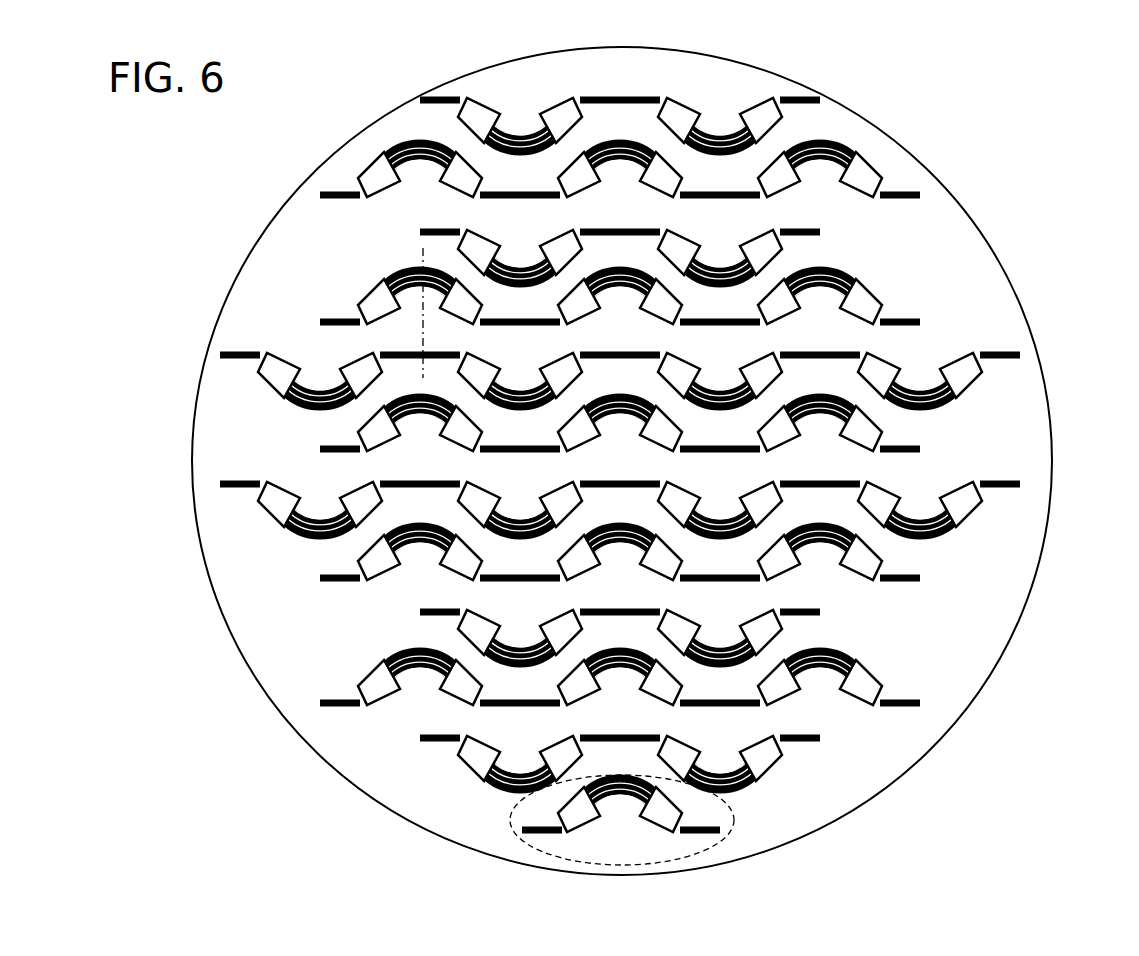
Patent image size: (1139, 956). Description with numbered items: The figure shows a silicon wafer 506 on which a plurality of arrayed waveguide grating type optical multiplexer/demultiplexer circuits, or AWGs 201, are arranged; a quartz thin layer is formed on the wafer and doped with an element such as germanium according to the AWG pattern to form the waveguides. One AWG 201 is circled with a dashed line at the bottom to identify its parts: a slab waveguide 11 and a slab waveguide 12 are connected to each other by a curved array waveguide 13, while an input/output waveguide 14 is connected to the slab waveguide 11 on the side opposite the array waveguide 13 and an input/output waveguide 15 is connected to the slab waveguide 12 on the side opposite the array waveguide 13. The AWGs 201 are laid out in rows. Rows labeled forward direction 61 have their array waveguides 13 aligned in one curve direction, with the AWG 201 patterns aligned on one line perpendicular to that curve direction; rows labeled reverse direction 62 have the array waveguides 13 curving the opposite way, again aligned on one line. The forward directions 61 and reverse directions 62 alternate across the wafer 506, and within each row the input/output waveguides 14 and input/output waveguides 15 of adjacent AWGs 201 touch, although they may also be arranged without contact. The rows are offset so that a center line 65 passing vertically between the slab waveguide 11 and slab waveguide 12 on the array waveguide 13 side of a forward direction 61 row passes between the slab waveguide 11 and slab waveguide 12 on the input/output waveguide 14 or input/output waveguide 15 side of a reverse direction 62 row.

The silicon wafer 506 is at (256, 234).
The center line 65 is at (420, 260).
The reverse direction 62 is at (848, 110).
The forward direction 61 is at (945, 206).
The arrayed waveguide grating type optical multiplexer/demultiplexer circuit 201 is at (510, 822).
The input/output waveguide 14 is at (533, 836).
The slab waveguide 11 is at (590, 832).
The array waveguide 13 is at (619, 802).
The slab waveguide 12 is at (655, 832).
The input/output waveguide 15 is at (714, 836).